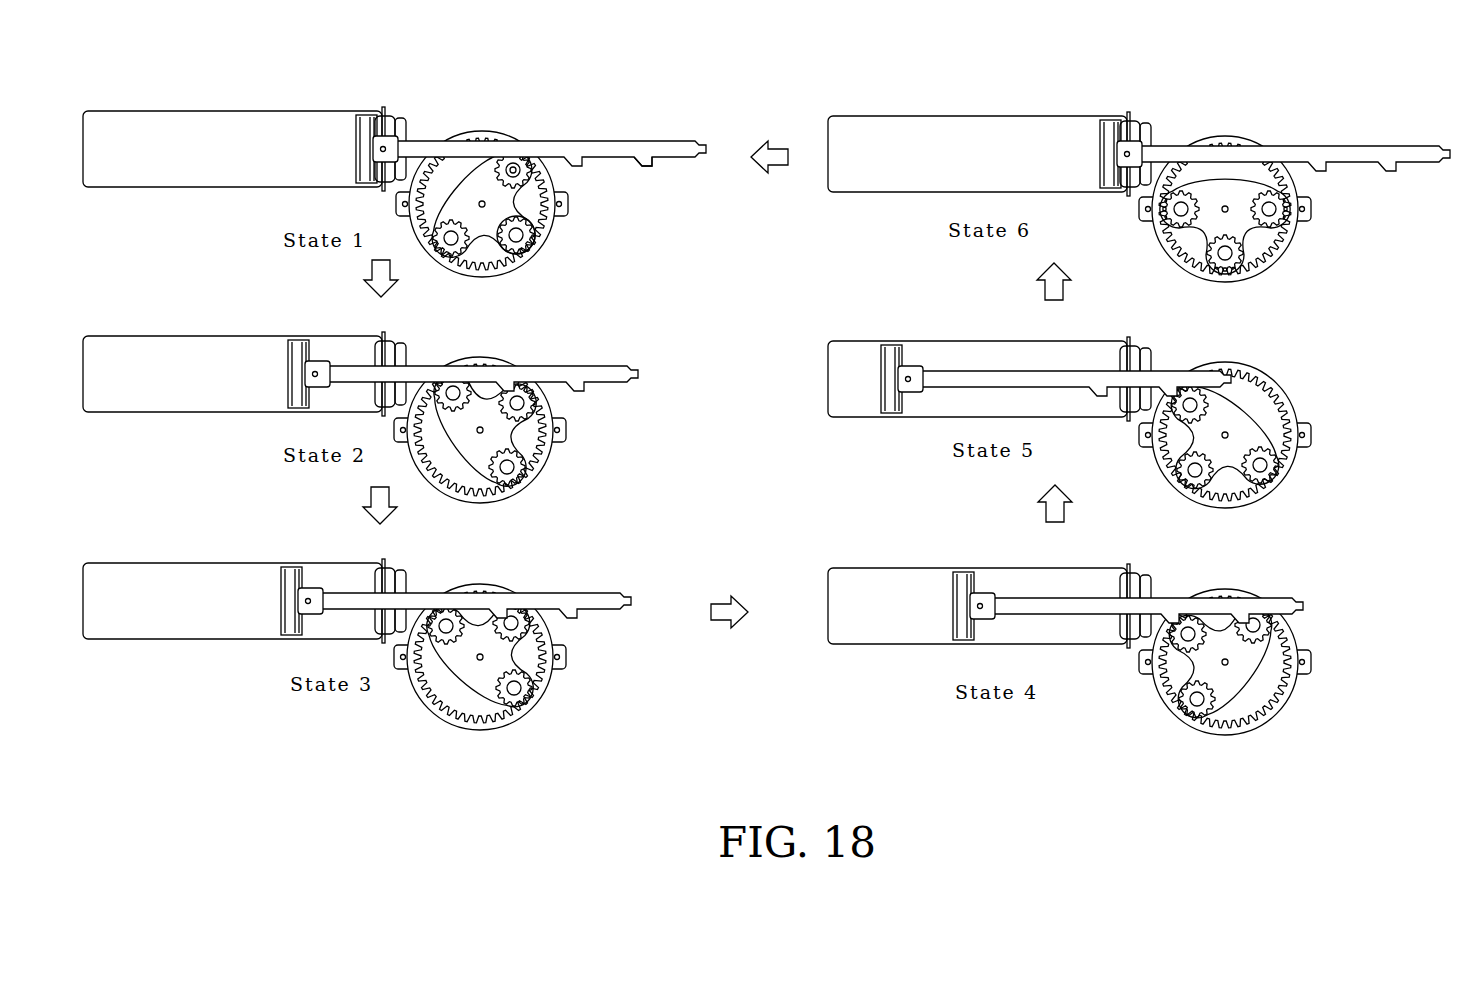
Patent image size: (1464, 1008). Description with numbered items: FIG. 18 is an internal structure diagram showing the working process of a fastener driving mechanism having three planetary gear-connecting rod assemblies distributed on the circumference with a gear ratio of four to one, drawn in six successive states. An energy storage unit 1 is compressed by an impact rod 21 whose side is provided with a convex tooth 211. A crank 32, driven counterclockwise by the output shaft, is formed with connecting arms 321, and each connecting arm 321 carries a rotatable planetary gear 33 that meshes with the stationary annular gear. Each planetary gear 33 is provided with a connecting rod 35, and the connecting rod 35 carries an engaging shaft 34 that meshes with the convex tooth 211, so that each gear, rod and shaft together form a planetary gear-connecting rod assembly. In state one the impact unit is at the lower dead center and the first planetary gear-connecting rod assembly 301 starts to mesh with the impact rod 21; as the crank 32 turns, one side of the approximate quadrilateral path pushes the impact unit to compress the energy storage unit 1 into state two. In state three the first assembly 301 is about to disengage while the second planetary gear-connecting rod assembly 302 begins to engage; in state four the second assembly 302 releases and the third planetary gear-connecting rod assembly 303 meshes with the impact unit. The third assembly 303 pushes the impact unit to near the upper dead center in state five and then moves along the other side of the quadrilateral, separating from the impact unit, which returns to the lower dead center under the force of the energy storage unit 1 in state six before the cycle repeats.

The energy storage unit 1 is at (177, 188).
The impact rod 21 is at (615, 145).
The convex tooth 211 is at (650, 170).
The crank 32 is at (465, 177).
The connecting arm 321 is at (535, 192).
The planetary gear 33 is at (532, 160).
The engaging shaft 34 is at (522, 157).
The connecting rod 35 is at (507, 165).
The first planetary gear-connecting rod assembly 301 is at (534, 127).
The second planetary gear-connecting rod assembly 302 is at (543, 223).
The third planetary gear-connecting rod assembly 303 is at (475, 262).